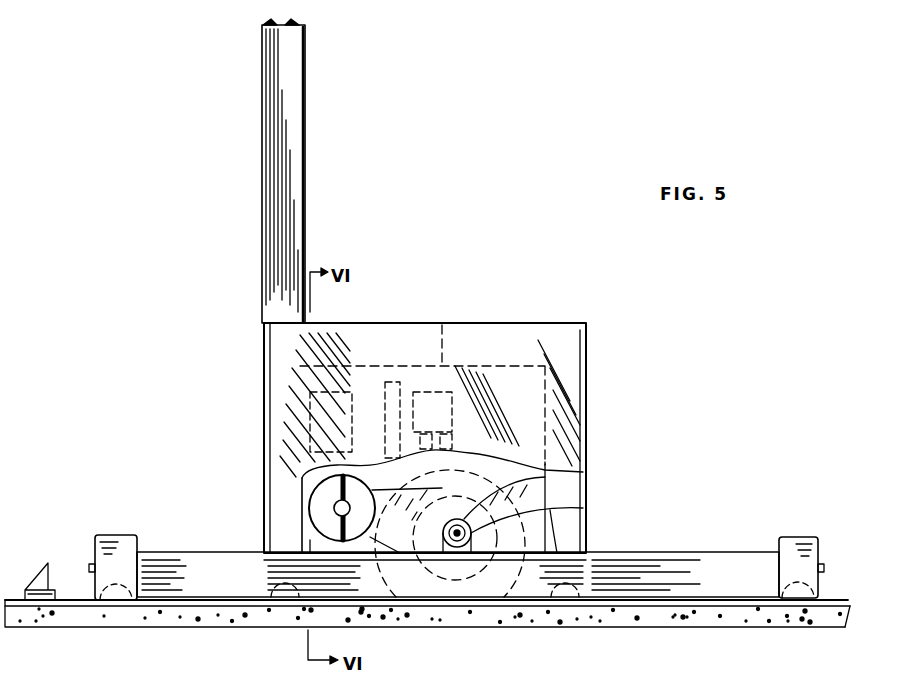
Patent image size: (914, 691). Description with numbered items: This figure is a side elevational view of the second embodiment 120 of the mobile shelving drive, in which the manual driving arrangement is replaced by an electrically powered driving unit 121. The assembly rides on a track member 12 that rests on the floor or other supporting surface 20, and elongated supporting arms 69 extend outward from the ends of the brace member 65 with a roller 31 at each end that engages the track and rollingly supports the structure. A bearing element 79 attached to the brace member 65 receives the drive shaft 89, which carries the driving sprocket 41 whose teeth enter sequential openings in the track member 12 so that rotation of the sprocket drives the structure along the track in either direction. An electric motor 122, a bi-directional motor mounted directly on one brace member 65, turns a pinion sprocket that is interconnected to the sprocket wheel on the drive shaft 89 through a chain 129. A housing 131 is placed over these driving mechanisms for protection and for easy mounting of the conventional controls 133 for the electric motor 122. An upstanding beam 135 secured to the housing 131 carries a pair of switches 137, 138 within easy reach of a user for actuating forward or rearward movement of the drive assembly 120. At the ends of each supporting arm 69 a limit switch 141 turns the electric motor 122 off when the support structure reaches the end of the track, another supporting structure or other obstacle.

The track member 12 is at (824, 605).
The floor or other supporting surface 20 is at (704, 618).
The roller 31 is at (828, 614).
The driving sprocket 41 is at (583, 473).
The longitudinal brace member 65 is at (390, 580).
The elongated supporting arm 69 is at (222, 572).
The bearing element 79 is at (583, 509).
The drive shaft 89 is at (445, 529).
The second embodiment 120 is at (668, 422).
The electrically powered driving unit 121 is at (548, 280).
The electric motor 122 is at (322, 513).
The chain 129 is at (372, 540).
The housing 131 is at (567, 362).
The controls 133 is at (435, 390).
The upstanding beam 135 is at (295, 204).
The switch 137 is at (272, 22).
The switch 138 is at (292, 22).
The limit switch 141 is at (88, 568).